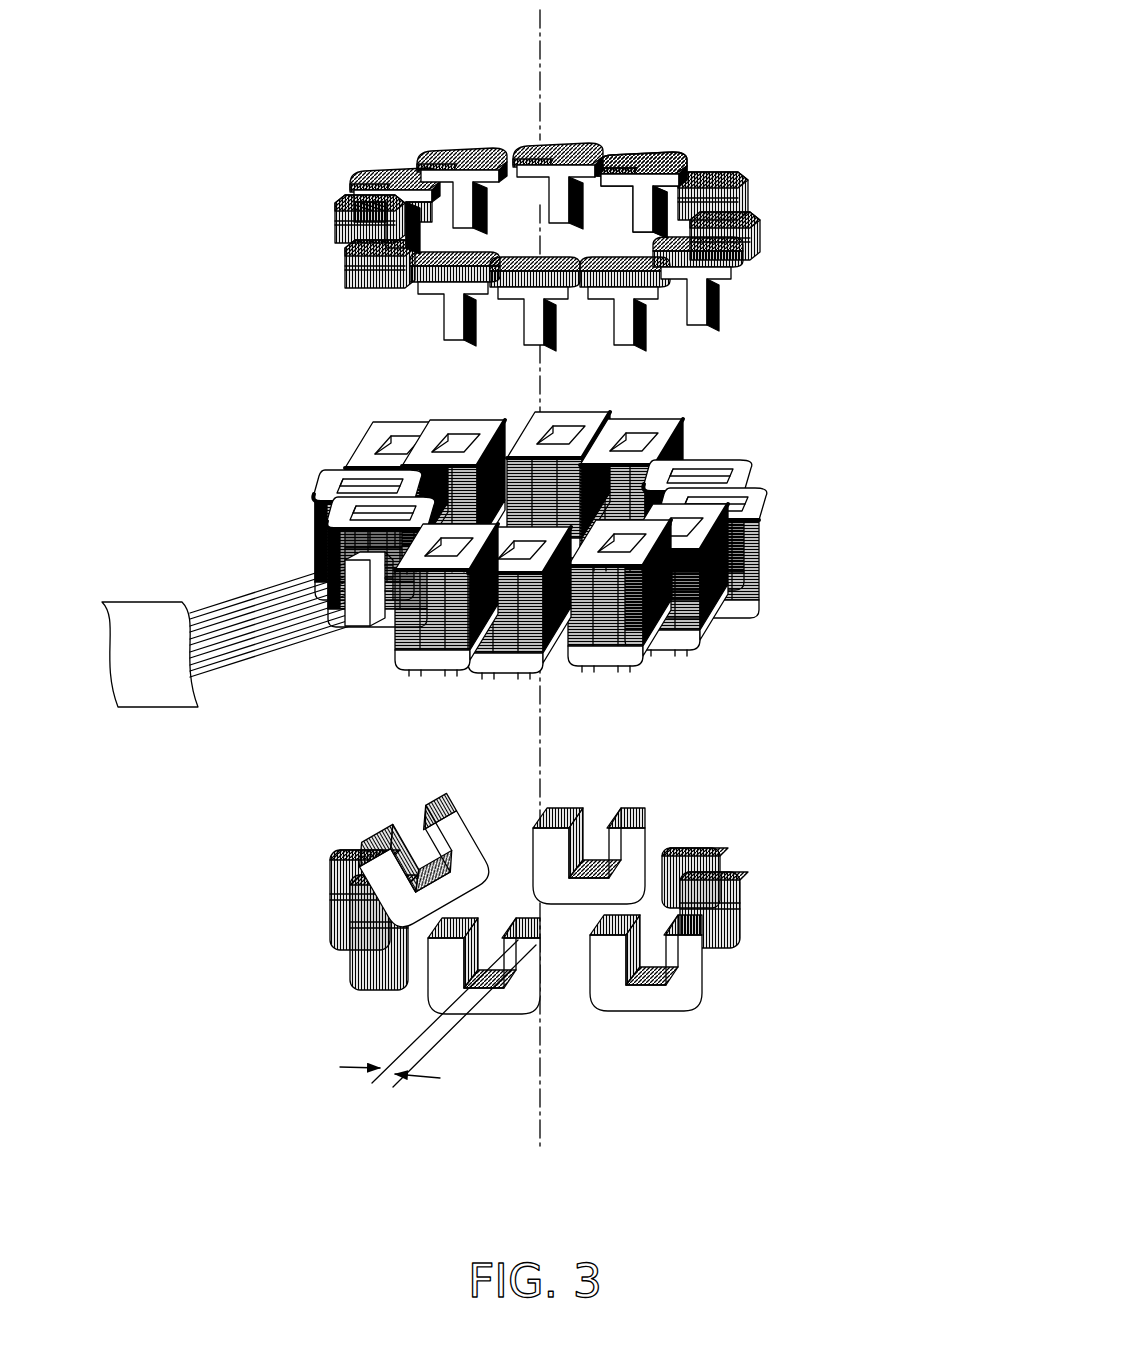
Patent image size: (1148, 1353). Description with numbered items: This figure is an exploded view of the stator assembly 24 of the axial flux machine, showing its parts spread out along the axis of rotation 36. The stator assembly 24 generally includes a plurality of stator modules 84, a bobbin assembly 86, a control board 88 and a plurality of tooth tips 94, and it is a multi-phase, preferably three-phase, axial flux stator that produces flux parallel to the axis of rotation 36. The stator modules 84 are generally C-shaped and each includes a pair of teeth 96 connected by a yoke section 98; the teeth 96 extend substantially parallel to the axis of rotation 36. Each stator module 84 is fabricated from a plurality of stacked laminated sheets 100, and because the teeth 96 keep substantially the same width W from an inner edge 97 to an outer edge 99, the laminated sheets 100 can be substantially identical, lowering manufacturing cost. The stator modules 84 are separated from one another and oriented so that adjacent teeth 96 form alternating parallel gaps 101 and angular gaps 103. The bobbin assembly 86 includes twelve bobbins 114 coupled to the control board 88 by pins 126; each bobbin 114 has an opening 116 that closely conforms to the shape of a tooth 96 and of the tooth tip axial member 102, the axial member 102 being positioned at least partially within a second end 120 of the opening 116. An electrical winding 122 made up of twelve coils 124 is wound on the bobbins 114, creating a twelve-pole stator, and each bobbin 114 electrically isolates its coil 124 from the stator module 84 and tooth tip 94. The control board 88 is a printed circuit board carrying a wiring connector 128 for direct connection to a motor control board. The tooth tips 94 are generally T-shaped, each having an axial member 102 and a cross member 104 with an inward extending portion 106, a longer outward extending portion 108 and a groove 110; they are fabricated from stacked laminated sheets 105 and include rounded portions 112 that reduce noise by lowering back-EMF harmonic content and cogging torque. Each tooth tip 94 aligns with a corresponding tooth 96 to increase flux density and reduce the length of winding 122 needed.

The stator assembly 24 is at (205, 333).
The axis of rotation 36 is at (540, 1130).
The stator modules 84 is at (345, 990).
The bobbin assembly 86 is at (790, 542).
The control board 88 is at (160, 707).
The tooth tips 94 is at (748, 160).
The teeth 96 is at (560, 806).
The inner edge 97 is at (448, 912).
The yoke section 98 is at (680, 990).
The outer edge 99 is at (440, 940).
The laminated sheets 100 is at (732, 948).
The parallel gaps 101 is at (598, 843).
The axial member 102 is at (556, 205).
The angular gaps 103 is at (560, 1005).
The cross member 104 is at (618, 152).
The laminated sheets 105 is at (365, 298).
The inward extending portion 106 is at (536, 142).
The outward extending portion 108 is at (423, 152).
The groove 110 is at (456, 145).
The rounded portions 112 is at (455, 290).
The bobbins 114 is at (715, 422).
The opening 116 is at (592, 415).
The second end 120 is at (498, 688).
The electrical winding 122 is at (740, 620).
The coils 124 is at (718, 625).
The pins 126 is at (350, 656).
The wiring connector 128 is at (345, 572).
The width W is at (383, 1087).